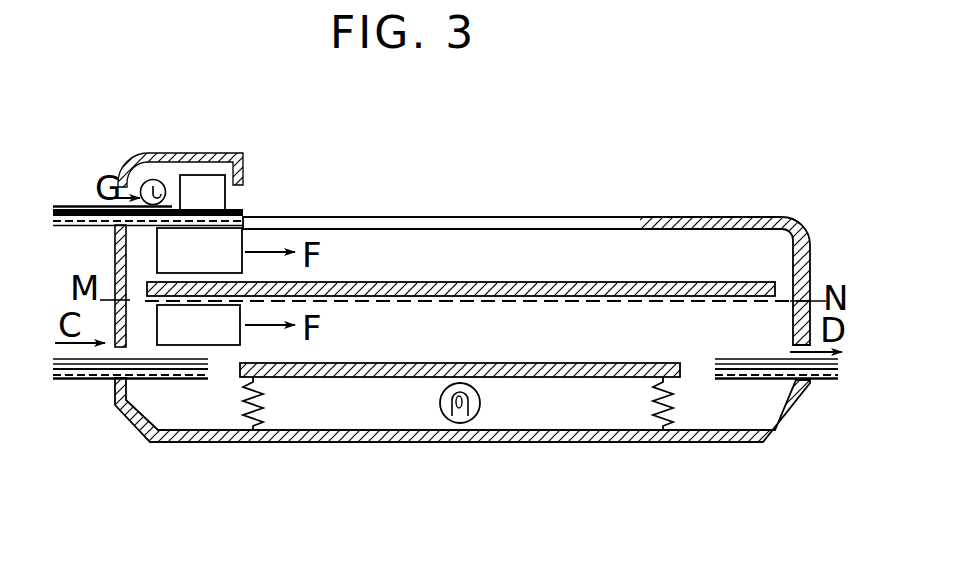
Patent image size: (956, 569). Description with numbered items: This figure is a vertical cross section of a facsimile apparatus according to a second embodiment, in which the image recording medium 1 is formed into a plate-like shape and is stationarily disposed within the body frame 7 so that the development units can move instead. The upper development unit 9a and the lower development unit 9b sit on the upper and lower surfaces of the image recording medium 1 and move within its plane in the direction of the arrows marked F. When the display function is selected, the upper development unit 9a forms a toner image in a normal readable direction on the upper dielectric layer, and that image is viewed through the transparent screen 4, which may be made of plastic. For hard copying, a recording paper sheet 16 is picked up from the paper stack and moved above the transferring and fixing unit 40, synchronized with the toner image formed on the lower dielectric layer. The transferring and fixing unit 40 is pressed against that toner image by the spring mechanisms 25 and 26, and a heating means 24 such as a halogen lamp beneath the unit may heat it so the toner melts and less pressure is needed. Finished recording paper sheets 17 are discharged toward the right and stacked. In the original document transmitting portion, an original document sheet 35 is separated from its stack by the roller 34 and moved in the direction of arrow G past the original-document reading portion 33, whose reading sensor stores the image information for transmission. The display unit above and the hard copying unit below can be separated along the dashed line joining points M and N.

The image recording medium 1 is at (721, 287).
The transparent screen 4 is at (658, 223).
The frame 7 is at (812, 250).
The upper development unit 9a is at (170, 250).
The lower development unit 9b is at (217, 347).
The recording paper sheet 16 is at (70, 380).
The recording paper sheets 17 is at (820, 382).
The heating means 24 is at (483, 403).
The spring mechanism 25 is at (266, 404).
The spring mechanism 26 is at (665, 407).
The original-document reading portion 33 is at (212, 180).
The roller 34 is at (153, 190).
The original document sheet 35 is at (78, 205).
The transferring and fixing unit 40 is at (495, 365).